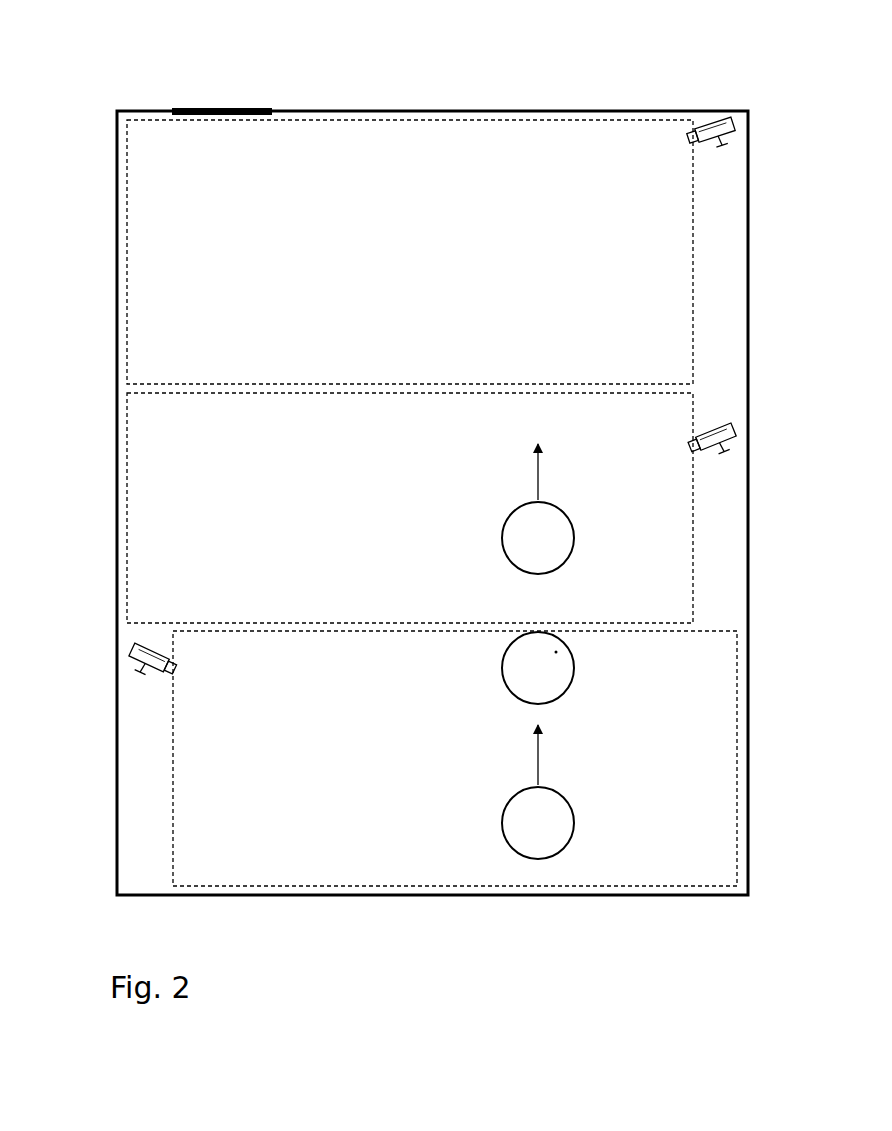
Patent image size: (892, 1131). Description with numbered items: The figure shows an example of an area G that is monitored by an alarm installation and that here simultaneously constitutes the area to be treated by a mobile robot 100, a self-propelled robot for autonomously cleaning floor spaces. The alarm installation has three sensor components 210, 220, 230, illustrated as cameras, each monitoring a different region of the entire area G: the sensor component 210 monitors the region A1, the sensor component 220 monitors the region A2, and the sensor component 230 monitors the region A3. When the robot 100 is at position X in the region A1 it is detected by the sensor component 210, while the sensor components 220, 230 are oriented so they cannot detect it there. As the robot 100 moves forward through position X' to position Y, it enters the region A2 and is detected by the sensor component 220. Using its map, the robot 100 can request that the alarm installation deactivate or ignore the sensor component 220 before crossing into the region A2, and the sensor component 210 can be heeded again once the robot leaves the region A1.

The area to be monitored G is at (279, 81).
The region A1 is at (163, 767).
The region A2 is at (127, 523).
The region A3 is at (126, 286).
The mobile robot 100 is at (499, 513).
The sensor component 210 is at (122, 652).
The sensor component 220 is at (700, 433).
The sensor component 230 is at (733, 147).